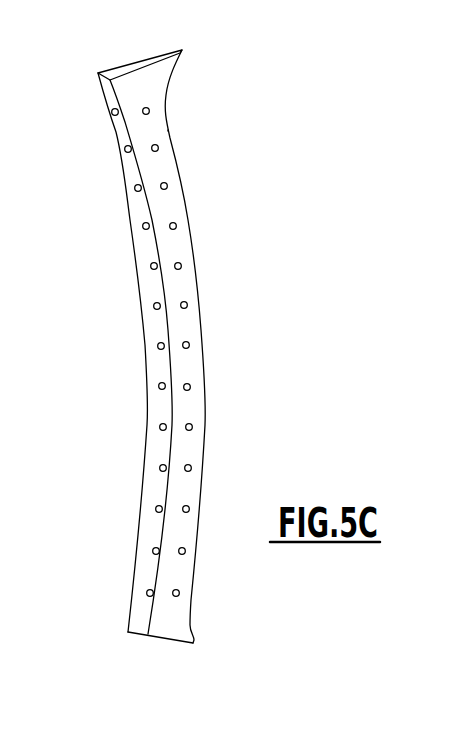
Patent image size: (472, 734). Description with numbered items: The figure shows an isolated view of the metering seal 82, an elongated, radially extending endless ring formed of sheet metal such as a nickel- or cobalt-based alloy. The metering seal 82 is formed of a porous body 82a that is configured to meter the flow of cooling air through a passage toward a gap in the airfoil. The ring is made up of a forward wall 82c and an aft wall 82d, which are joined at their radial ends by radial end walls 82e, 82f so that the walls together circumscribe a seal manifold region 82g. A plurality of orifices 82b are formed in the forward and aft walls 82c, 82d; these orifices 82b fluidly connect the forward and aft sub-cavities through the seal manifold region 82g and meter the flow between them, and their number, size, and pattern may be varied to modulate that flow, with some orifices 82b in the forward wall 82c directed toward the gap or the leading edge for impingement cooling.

The metering seal 82 is at (160, 353).
The porous body 82a is at (167, 155).
The orifices 82b is at (155, 309).
The forward wall 82c is at (190, 407).
The aft wall 82d is at (158, 407).
The radial end wall 82e is at (130, 65).
The radial end wall 82f is at (148, 630).
The seal manifold region 82g is at (147, 248).